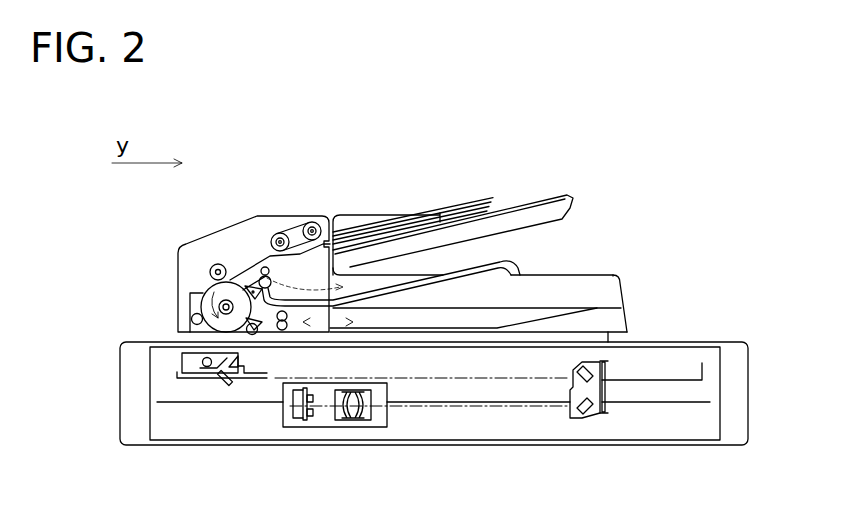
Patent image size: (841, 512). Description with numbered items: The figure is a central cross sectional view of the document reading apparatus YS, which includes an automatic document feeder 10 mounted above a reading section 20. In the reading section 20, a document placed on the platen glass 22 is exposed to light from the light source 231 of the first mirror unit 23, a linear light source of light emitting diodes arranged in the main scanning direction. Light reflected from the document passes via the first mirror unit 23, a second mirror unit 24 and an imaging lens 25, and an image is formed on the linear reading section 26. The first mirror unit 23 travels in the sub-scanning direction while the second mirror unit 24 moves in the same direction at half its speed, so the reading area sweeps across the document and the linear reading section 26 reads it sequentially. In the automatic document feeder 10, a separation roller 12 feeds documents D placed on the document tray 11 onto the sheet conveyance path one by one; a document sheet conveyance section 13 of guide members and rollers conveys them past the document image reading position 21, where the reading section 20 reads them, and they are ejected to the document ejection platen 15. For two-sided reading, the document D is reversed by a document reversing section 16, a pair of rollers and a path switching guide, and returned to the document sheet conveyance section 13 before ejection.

The automatic document feeder 10 is at (100, 259).
The document tray 11 is at (548, 201).
The separation roller 12 is at (297, 228).
The document sheet conveyance section 13 is at (195, 268).
The document ejection platen 15 is at (470, 267).
The document reversing section 16 is at (268, 331).
The reading section 20 is at (101, 400).
The document image reading position 21 is at (232, 346).
The platen glass 22 is at (395, 347).
The first mirror unit 23 is at (182, 362).
The light source 231 is at (212, 372).
The second mirror unit 24 is at (604, 389).
The imaging lens 25 is at (352, 421).
The linear reading section 26 is at (303, 412).
The document D is at (460, 212).
The document reading apparatus YS is at (618, 204).